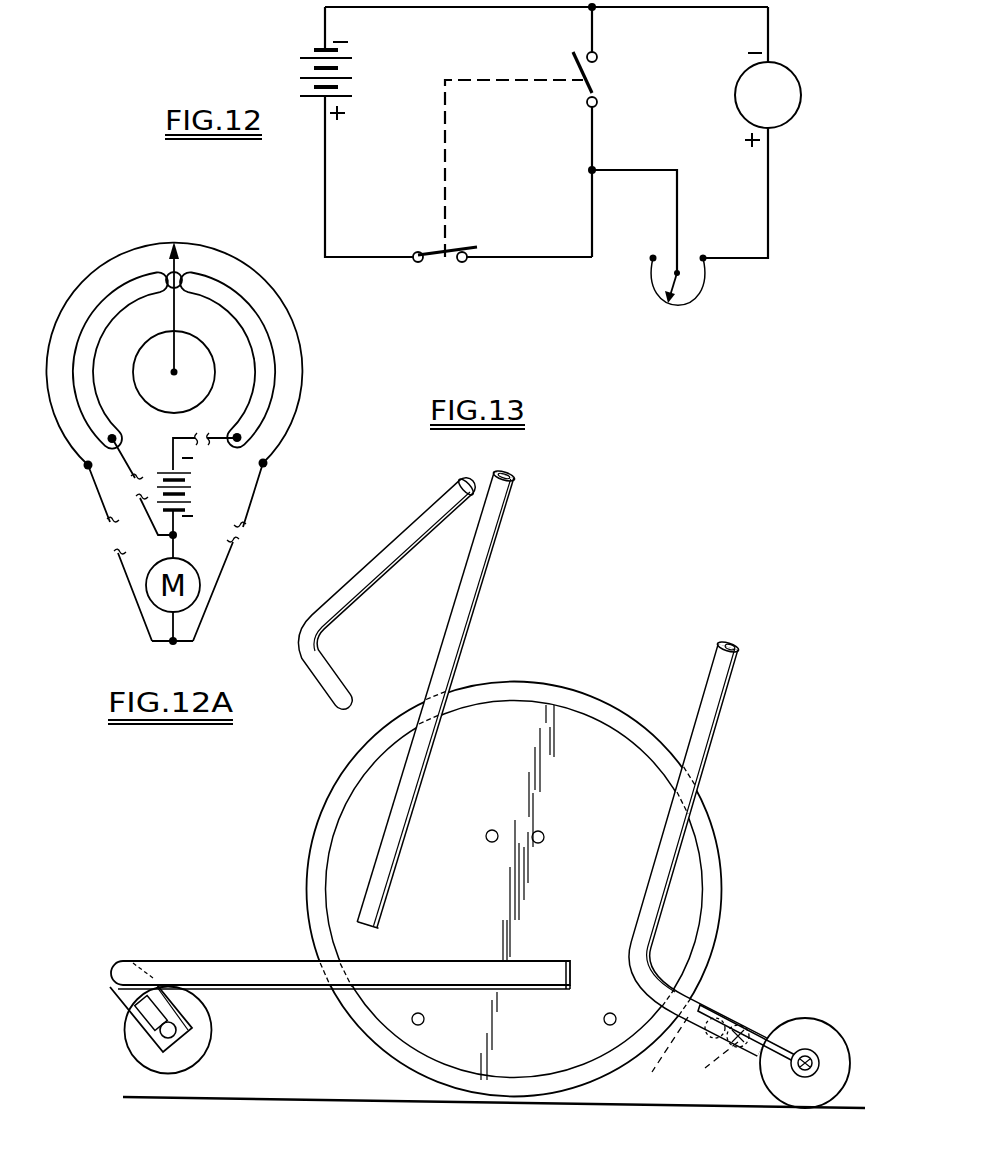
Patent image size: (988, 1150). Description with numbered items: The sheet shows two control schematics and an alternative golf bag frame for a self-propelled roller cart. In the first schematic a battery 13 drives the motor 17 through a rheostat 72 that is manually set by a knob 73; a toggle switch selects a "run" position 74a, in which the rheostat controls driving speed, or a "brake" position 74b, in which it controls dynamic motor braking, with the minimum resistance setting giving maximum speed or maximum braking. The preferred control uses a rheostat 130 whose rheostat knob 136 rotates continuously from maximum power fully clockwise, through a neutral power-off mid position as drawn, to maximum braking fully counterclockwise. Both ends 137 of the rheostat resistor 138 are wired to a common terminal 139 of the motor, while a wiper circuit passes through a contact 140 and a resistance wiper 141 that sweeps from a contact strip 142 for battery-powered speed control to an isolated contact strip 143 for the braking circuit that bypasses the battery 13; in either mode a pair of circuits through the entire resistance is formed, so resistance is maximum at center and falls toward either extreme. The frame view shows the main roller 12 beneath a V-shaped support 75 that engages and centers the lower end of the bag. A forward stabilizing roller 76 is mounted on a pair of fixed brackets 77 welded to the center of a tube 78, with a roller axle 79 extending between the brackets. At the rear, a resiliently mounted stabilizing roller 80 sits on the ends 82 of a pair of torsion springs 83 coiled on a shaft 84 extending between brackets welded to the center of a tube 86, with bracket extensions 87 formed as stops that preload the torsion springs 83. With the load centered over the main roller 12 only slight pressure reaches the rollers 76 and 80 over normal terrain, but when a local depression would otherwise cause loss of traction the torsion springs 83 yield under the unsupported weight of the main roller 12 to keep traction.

In FIG. 13, the wheel 12 is at (633, 728).
In FIG. 12, the battery 13 is at (345, 90).
In FIG. 12A, the battery 13 is at (188, 507).
In FIG. 12, the motor 17 is at (750, 107).
In FIG. 12, the rheostat 72 is at (665, 316).
In FIG. 12, the knob 73 is at (680, 223).
In FIG. 12, the "run" position 74a is at (445, 260).
In FIG. 12, the "brake" position 74b is at (592, 82).
In FIG. 13, the V-shaped support 75 is at (367, 684).
In FIG. 13, the forward stabilizing roller 76 is at (212, 1032).
In FIG. 13, the fixed brackets 77 is at (192, 996).
In FIG. 13, the tube 78 is at (283, 970).
In FIG. 13, the roller axle 79 is at (174, 1034).
In FIG. 13, the stabilizing roller 80 is at (808, 1053).
In FIG. 13, the ends 82 is at (796, 1052).
In FIG. 13, the torsion springs 83 is at (751, 1005).
In FIG. 13, the shaft 84 is at (708, 1054).
In FIG. 13, the tube 86 is at (679, 1060).
In FIG. 13, the bracket extensions 87 is at (770, 1065).
In FIG. 12A, the rheostat 130 is at (318, 344).
In FIG. 12A, the rheostat knob 136 is at (192, 403).
In FIG. 12A, the ends 137 is at (88, 466).
In FIG. 12A, the rheostat resistor 138 is at (303, 390).
In FIG. 12A, the common terminal 139 is at (173, 646).
In FIG. 12A, the contact 140 is at (182, 280).
In FIG. 12A, the resistance wiper 141 is at (181, 246).
In FIG. 12A, the contact strip 142 is at (255, 326).
In FIG. 12A, the isolated contact strip 143 is at (127, 287).